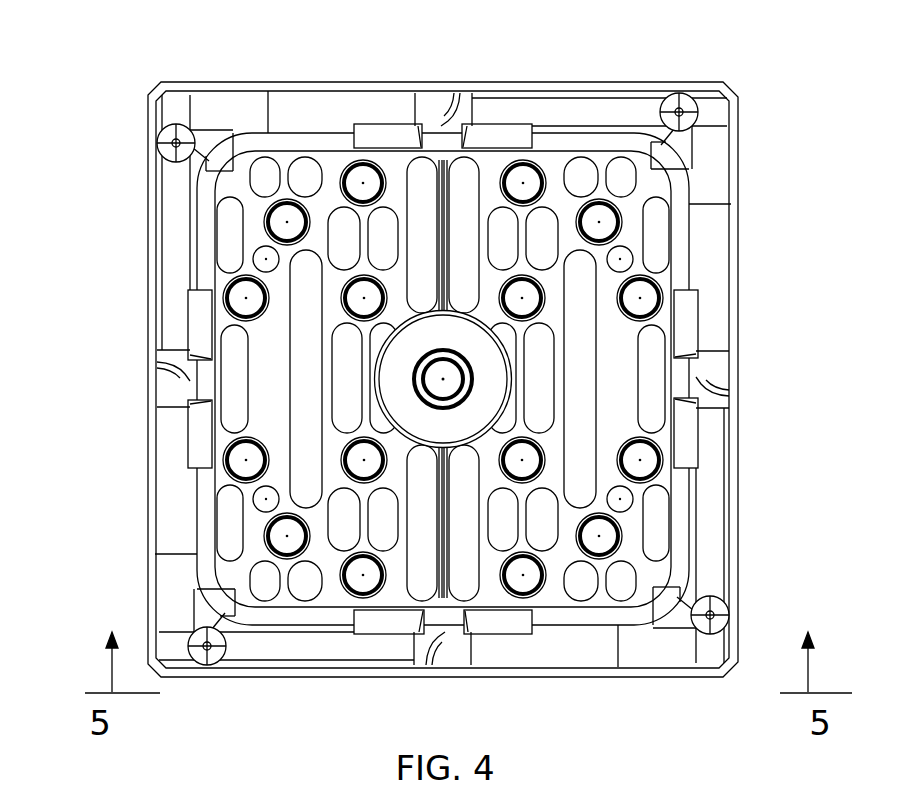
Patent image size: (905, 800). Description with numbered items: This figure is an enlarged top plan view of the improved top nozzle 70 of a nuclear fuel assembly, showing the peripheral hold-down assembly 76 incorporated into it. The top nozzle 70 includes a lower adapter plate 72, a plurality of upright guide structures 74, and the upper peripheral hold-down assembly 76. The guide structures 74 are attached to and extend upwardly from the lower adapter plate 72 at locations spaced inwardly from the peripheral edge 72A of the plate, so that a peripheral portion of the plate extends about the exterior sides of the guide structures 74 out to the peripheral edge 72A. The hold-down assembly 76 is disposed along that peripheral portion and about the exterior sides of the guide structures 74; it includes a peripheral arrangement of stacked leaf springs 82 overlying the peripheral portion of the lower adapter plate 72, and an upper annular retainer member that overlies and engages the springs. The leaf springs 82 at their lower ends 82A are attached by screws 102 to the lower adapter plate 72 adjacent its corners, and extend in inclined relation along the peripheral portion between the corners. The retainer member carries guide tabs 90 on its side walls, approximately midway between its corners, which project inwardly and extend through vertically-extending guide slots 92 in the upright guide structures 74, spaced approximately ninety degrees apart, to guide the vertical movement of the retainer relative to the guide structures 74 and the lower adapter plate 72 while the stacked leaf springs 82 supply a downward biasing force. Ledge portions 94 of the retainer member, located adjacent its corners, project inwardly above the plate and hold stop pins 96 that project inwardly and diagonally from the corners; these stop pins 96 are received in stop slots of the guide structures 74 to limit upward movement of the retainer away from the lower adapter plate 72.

The top nozzle 70 is at (760, 76).
The lower adapter plate 72 is at (633, 95).
The peripheral edge 72A is at (535, 130).
The upright guide structures 74 is at (338, 128).
The peripheral hold-down assembly 76 is at (742, 160).
The stacked leaf springs 82 is at (598, 102).
The lower ends of leaf springs 82A is at (180, 172).
The guide tabs 90 is at (447, 136).
The guide slots 92 is at (438, 130).
The ledge portions 94 is at (244, 102).
The stop pins 96 is at (732, 136).
The screws 102 is at (178, 124).